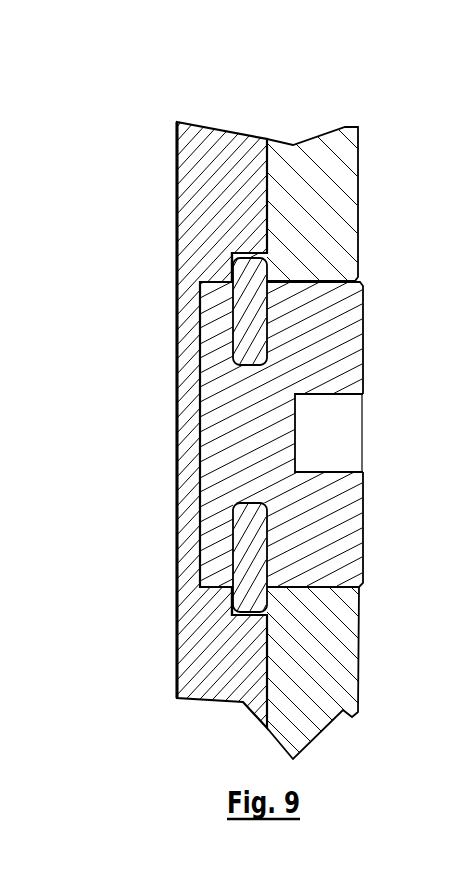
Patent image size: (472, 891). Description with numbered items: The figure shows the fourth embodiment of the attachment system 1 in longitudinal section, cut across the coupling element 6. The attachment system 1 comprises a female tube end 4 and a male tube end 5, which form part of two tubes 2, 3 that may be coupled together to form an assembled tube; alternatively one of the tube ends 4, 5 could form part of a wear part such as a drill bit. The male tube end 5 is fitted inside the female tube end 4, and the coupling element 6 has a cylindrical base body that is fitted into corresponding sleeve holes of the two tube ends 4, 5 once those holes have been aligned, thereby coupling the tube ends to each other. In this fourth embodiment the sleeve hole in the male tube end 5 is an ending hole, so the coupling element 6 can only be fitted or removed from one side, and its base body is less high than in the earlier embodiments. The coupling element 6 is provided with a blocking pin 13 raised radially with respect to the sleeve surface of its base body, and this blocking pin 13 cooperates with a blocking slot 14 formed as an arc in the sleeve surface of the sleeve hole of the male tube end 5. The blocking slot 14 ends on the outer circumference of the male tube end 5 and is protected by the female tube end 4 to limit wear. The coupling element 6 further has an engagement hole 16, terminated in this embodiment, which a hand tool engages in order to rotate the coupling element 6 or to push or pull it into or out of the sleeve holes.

The attachment system 1 is at (121, 331).
The tube 2 is at (342, 213).
The tube 3 is at (197, 200).
The female tube end 4 is at (362, 672).
The male tube end 5 is at (168, 650).
The coupling element 6 is at (330, 523).
The blocking pin 13 is at (250, 318).
The blocking slot 14 is at (238, 253).
The engagement hole 16 is at (338, 430).